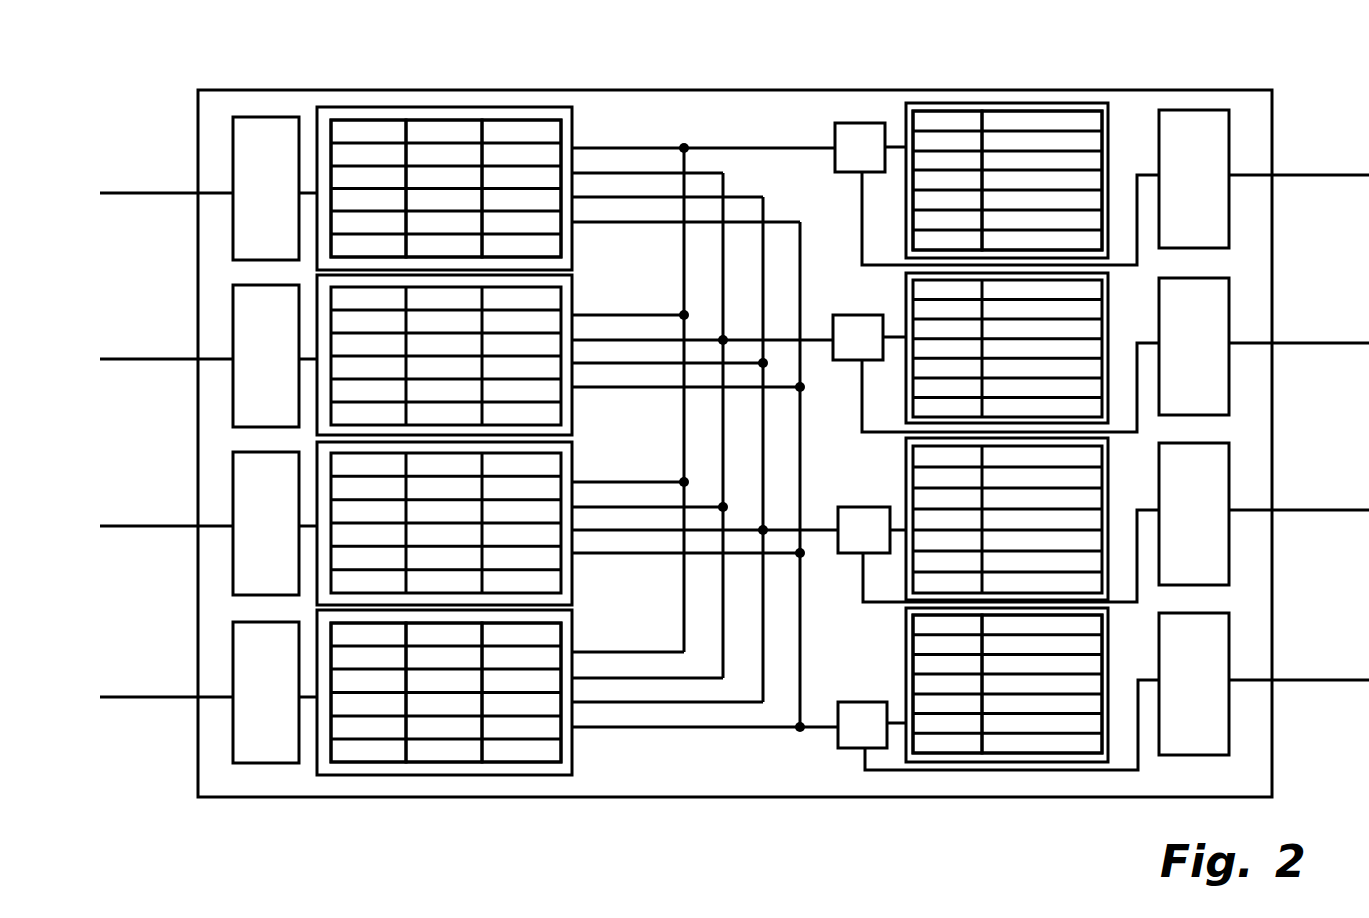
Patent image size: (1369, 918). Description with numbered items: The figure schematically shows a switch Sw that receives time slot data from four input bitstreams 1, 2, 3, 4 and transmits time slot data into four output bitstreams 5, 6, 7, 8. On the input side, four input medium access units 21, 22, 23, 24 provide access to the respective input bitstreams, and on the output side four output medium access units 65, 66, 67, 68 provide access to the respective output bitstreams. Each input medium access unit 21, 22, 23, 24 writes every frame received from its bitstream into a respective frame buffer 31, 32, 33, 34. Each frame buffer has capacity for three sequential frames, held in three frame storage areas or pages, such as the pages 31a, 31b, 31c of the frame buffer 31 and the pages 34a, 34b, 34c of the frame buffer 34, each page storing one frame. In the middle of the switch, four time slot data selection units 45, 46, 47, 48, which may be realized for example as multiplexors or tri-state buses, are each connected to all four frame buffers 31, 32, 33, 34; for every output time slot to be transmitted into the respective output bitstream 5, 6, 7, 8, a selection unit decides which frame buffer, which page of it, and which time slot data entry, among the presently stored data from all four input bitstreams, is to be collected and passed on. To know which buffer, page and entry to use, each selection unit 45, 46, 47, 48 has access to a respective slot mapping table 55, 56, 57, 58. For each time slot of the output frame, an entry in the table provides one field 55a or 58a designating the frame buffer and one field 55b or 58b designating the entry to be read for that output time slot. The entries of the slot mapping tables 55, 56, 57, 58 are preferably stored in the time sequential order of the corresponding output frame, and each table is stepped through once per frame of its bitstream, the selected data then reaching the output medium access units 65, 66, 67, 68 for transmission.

The switch Sw is at (220, 800).
The input bitstream 1 is at (140, 193).
The input bitstream 2 is at (140, 359).
The input bitstream 3 is at (140, 526).
The input bitstream 4 is at (135, 697).
The output bitstream 5 is at (1305, 175).
The output bitstream 6 is at (1305, 343).
The output bitstream 7 is at (1315, 510).
The output bitstream 8 is at (1318, 680).
The input medium access unit 21 is at (246, 228).
The input medium access unit 22 is at (246, 394).
The input medium access unit 23 is at (246, 560).
The input medium access unit 24 is at (248, 720).
The frame buffer 31 is at (422, 148).
The frame storage area 31a is at (367, 118).
The frame storage area 31b is at (447, 118).
The frame storage area 31c is at (528, 118).
The frame buffer 32 is at (583, 290).
The frame buffer 33 is at (583, 458).
The frame buffer 34 is at (419, 737).
The frame storage area 34a is at (383, 765).
The frame storage area 34b is at (465, 765).
The frame storage area 34c is at (530, 765).
The time slot data selection unit 45 is at (870, 135).
The time slot data selection unit 46 is at (860, 330).
The time slot data selection unit 47 is at (858, 540).
The time slot data selection unit 48 is at (848, 748).
The slot mapping table 55 is at (1027, 140).
The field designating the frame buffer 55a is at (953, 110).
The field designating the entry 55b is at (1033, 110).
The slot mapping table 56 is at (896, 490).
The slot mapping table 57 is at (898, 689).
The slot mapping table 58 is at (1005, 734).
The field designating the frame buffer 58a is at (970, 753).
The field designating the entry 58b is at (1068, 753).
The output medium access unit 65 is at (1208, 183).
The output medium access unit 66 is at (1218, 362).
The output medium access unit 67 is at (1208, 528).
The output medium access unit 68 is at (1218, 725).